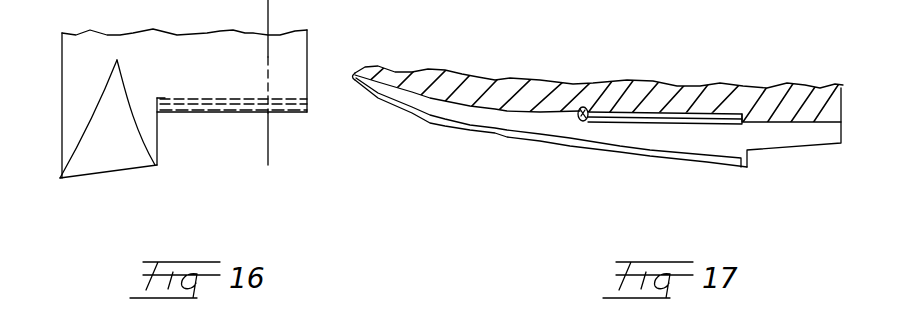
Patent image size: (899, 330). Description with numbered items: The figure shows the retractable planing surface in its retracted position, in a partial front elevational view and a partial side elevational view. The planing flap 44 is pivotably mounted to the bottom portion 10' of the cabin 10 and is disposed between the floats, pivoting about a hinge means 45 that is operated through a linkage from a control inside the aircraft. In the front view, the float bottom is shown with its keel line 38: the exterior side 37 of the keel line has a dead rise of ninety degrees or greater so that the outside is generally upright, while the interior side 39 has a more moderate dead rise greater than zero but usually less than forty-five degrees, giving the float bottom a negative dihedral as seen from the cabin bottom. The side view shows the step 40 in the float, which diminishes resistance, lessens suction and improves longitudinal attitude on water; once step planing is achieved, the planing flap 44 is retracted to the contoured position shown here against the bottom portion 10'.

In FIG. 17, the cabin 10 is at (584, 129).
In FIG. 16, the bottom portion of the cabin 10' is at (232, 82).
In FIG. 16, the exterior side of the keel line 37 is at (75, 120).
In FIG. 16, the keel line 38 is at (62, 179).
In FIG. 17, the keel line 38 is at (573, 152).
In FIG. 16, the interior side of the keel line 39 is at (128, 153).
In FIG. 17, the interior side of the keel line 39 is at (650, 156).
In FIG. 17, the step 40 is at (747, 165).
In FIG. 16, the retractable planing flap 44 is at (223, 111).
In FIG. 17, the retractable planing flap 44 is at (707, 125).
In FIG. 16, the hinge means 45 is at (189, 106).
In FIG. 17, the hinge means 45 is at (585, 108).